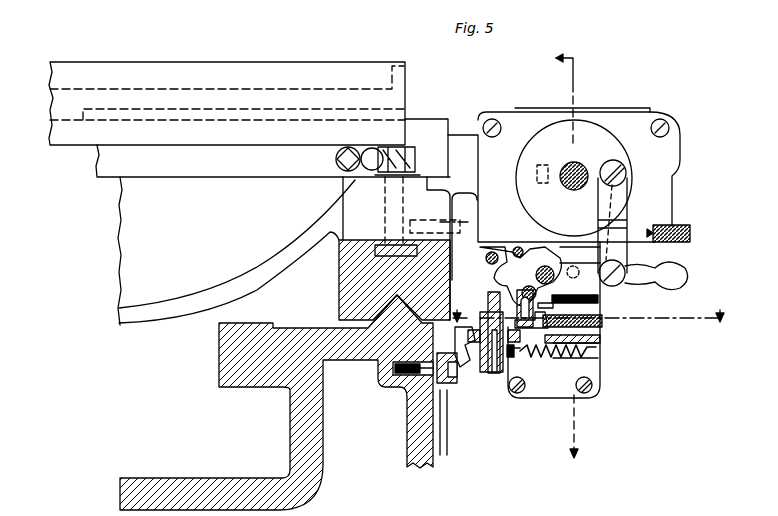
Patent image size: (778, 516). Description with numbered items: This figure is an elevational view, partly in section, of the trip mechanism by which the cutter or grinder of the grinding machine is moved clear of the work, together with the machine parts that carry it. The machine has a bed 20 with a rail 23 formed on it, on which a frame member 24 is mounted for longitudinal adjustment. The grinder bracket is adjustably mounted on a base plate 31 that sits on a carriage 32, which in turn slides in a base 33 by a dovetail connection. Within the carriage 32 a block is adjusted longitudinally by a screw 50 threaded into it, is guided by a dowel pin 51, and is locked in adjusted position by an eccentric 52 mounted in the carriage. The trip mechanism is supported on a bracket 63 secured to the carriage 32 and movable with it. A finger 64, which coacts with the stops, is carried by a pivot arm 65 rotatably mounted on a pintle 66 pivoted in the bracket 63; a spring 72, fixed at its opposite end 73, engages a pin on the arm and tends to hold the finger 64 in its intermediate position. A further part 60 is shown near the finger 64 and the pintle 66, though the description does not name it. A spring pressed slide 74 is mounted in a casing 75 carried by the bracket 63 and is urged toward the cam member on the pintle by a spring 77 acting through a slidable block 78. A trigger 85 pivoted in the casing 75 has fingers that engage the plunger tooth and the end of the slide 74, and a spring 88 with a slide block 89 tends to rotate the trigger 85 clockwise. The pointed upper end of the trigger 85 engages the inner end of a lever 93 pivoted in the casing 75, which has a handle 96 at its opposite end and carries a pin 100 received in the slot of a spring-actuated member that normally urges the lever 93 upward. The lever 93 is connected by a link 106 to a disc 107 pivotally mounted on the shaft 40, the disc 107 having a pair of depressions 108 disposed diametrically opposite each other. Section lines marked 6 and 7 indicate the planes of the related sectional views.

The bed 20 is at (440, 456).
The rail 23 is at (378, 305).
The frame member 24 is at (345, 281).
The base plate 31 is at (366, 70).
The carriage 32 is at (412, 127).
The base 33 is at (138, 203).
The shaft 40 is at (578, 162).
The screw 50 is at (373, 153).
The dowel pin 51 is at (382, 182).
The eccentric 52 is at (336, 160).
The sear 60 is at (497, 375).
The bracket 63 is at (460, 141).
The finger 64 is at (463, 355).
The pivot arm 65 is at (524, 357).
The pintle 66 is at (495, 375).
The spring 72 is at (550, 357).
The fixed end of spring 73 is at (603, 348).
The spring pressed slide 74 is at (604, 320).
The casing 75 is at (540, 390).
The spring 77 is at (600, 340).
The slidable block 78 is at (555, 356).
The trigger 85 is at (520, 276).
The spring 88 is at (595, 300).
The slide block 89 is at (548, 300).
The lever 93 is at (583, 272).
The handle 96 is at (680, 278).
The pin 100 is at (583, 255).
The link 106 is at (628, 203).
The disc 107 is at (608, 173).
The depression 108 is at (538, 163).
The section line 6- 6 is at (572, 259).
The section line 7- 7 is at (588, 309).